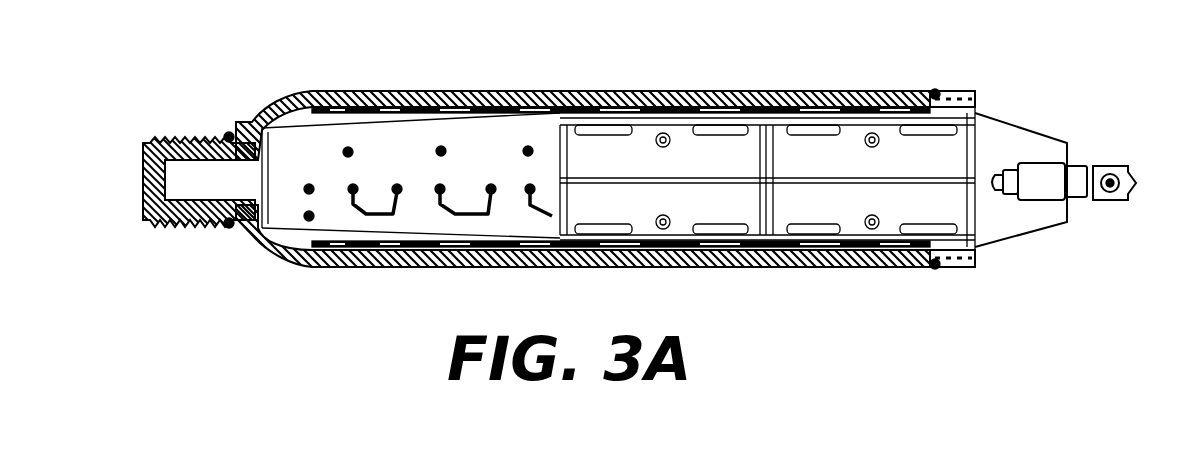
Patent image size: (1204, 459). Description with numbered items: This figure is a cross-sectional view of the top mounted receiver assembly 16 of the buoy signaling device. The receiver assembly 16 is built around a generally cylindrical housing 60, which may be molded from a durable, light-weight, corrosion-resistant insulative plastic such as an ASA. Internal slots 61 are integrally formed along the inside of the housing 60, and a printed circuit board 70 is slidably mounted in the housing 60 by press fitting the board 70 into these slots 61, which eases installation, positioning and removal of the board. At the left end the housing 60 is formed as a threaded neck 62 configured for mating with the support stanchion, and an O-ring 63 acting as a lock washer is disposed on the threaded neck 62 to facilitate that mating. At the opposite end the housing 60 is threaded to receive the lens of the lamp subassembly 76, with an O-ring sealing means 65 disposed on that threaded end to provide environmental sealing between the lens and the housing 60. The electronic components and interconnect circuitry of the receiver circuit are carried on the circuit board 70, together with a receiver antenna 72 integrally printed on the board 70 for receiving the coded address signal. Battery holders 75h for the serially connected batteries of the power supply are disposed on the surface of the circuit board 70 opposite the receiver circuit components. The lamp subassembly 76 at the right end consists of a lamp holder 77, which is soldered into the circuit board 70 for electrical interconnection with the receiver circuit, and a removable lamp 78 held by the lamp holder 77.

The receiver assembly 16 is at (673, 44).
The housing 60 is at (465, 80).
The internal slots 61 is at (362, 107).
The threaded neck 62 is at (165, 124).
The O-ring 63 is at (220, 240).
The O-ring sealing means 65 is at (933, 85).
The printed circuit board 70 is at (390, 152).
The receiver antenna 72 is at (470, 222).
The battery holders 75h is at (730, 128).
The lamp subassembly 76 is at (1092, 137).
The lamp holder 77 is at (1040, 177).
The removable lamp 78 is at (1134, 165).